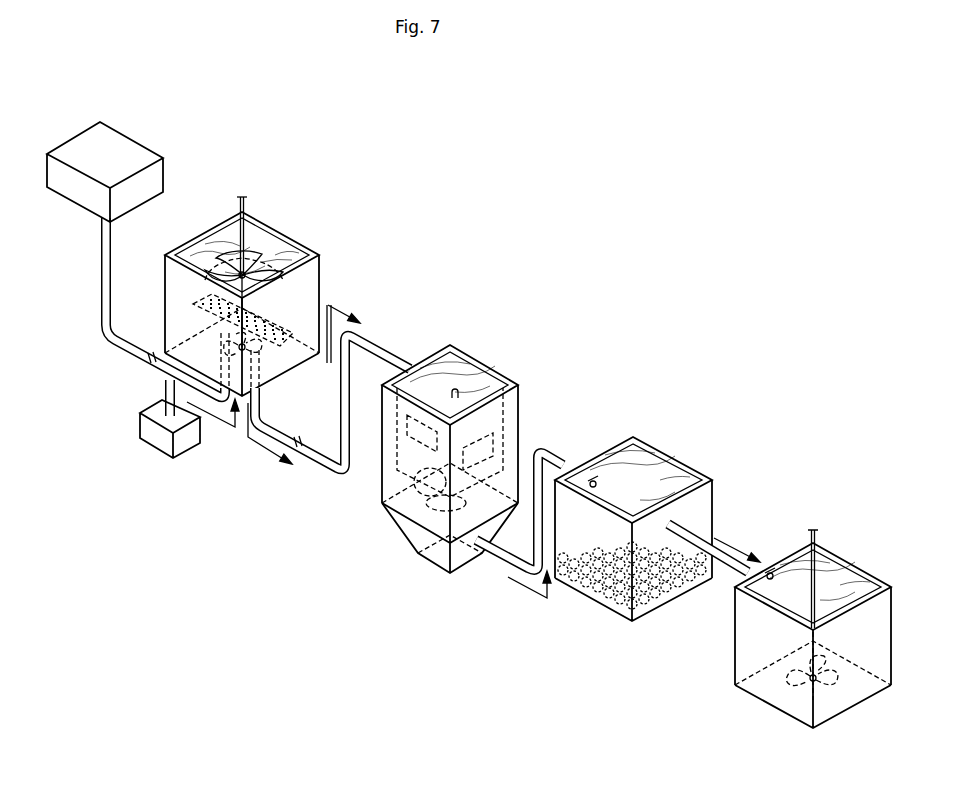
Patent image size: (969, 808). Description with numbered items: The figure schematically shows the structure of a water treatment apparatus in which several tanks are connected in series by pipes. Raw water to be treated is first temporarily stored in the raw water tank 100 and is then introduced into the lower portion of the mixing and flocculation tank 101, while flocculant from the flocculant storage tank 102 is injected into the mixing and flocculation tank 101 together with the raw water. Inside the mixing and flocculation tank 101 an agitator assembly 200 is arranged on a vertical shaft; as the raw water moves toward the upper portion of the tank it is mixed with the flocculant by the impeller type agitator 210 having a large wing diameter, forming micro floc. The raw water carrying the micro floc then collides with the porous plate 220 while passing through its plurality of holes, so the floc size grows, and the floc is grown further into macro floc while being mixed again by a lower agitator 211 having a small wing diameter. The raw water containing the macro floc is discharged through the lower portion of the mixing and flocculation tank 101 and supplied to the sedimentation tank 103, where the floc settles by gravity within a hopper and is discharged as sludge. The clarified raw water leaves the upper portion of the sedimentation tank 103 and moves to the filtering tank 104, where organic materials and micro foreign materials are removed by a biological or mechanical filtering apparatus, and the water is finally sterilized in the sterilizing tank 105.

The raw water tank 100 is at (112, 147).
The mixing and flocculation tank 101 is at (317, 186).
The flocculant storage tank 102 is at (152, 440).
The sedimentation tank 103 is at (518, 342).
The filtering tank 104 is at (712, 427).
The sterilizing tank 105 is at (880, 510).
The stirring unit 200 is at (312, 268).
The impeller type agitator 210 is at (278, 281).
The discharge impeller 211 is at (263, 352).
The porous plate 220 is at (200, 301).